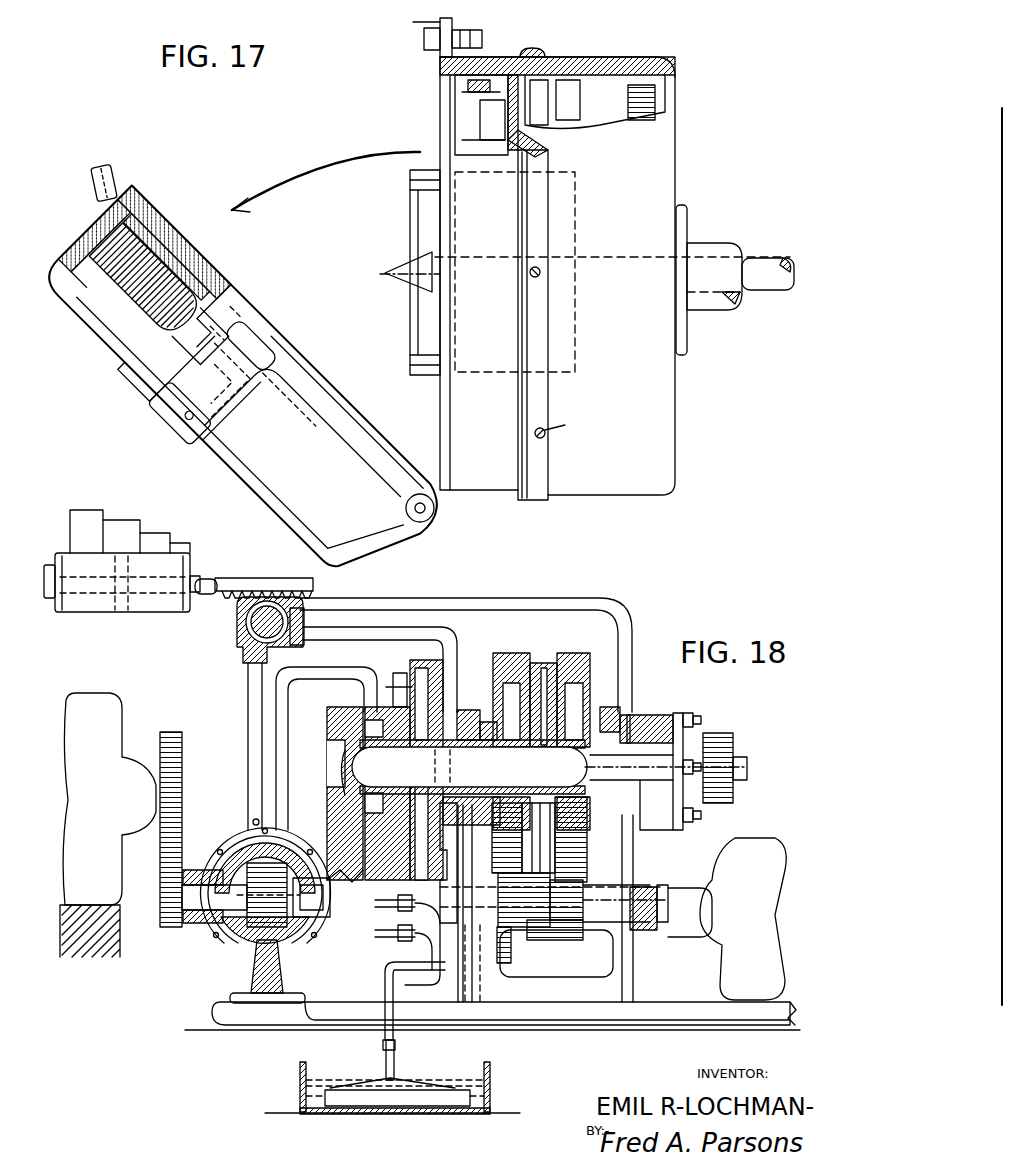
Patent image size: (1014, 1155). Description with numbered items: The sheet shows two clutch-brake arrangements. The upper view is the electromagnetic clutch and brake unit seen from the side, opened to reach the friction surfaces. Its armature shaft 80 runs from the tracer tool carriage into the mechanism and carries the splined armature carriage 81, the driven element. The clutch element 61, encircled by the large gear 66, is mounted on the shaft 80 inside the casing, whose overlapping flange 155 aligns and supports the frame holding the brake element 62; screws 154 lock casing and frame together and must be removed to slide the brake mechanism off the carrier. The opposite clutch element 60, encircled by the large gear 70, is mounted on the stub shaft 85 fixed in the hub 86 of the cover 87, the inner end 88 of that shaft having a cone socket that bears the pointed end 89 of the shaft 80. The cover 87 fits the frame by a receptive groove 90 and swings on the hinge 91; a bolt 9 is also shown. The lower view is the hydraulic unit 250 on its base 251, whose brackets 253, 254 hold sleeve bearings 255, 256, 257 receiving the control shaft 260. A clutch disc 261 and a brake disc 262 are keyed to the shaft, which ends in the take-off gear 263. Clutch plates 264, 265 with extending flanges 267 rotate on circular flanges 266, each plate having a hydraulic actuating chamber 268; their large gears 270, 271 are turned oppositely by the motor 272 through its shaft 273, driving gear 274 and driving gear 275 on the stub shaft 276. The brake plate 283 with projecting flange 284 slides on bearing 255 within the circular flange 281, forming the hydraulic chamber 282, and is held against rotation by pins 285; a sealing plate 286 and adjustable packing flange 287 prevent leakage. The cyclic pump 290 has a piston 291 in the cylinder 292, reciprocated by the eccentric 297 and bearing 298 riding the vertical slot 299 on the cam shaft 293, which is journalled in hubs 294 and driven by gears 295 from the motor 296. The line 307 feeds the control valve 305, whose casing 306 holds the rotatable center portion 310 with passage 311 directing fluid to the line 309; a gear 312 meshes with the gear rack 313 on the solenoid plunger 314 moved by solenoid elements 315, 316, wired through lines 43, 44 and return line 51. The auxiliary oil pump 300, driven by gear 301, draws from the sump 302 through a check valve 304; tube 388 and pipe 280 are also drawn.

In FIG. 17, the bolt 9 is at (425, 22).
In FIG. 17, the overlapping flange 155 is at (545, 60).
In FIG. 17, the clutch element 61 is at (612, 100).
In FIG. 17, the large gear 66 is at (645, 88).
In FIG. 17, the brake element 62 is at (495, 150).
In FIG. 17, the armature carriage 81 is at (415, 226).
In FIG. 17, the pointed end 89 is at (398, 280).
In FIG. 17, the screws 154 is at (532, 276).
In FIG. 17, the armature shaft 80 is at (768, 292).
In FIG. 17, the receptive groove 90 is at (138, 205).
In FIG. 17, the large gear 70 is at (86, 250).
In FIG. 17, the clutch element 60 is at (168, 306).
In FIG. 17, the cover 87 is at (115, 343).
In FIG. 17, the inner end 88 is at (258, 348).
In FIG. 17, the hub 86 is at (152, 401).
In FIG. 17, the stub shaft 85 is at (238, 386).
In FIG. 17, the hinge 91 is at (405, 506).
In FIG. 18, the solenoid element 316 is at (145, 610).
In FIG. 18, the solenoid element 315 is at (72, 610).
In FIG. 18, the line 43 is at (78, 512).
In FIG. 18, the return line 51 is at (112, 522).
In FIG. 18, the line 44 is at (150, 533).
In FIG. 18, the solenoid plunger 314 is at (205, 580).
In FIG. 18, the gear rack 313 is at (246, 575).
In FIG. 18, the rotatable center portion 310 is at (278, 600).
In FIG. 18, the passage 311 is at (240, 645).
In FIG. 18, the gear 312 is at (245, 620).
In FIG. 18, the valve casing 306 is at (238, 666).
In FIG. 18, the control valve 305 is at (243, 678).
In FIG. 18, the brake plate 283 is at (400, 680).
In FIG. 18, the line 309 is at (430, 690).
In FIG. 18, the pins 285 is at (380, 700).
In FIG. 18, the clutch plate 264 is at (622, 606).
In FIG. 18, the unit 250 is at (650, 603).
In FIG. 18, the tube 388 is at (575, 598).
In FIG. 18, the line 307 is at (250, 808).
In FIG. 18, the pipe 280 is at (306, 786).
In FIG. 18, the hydraulic chamber 282 is at (340, 715).
In FIG. 18, the projecting flange 284 is at (345, 728).
In FIG. 18, the sleeve bearing 255 is at (345, 745).
In FIG. 18, the sealing plate 286 is at (345, 768).
In FIG. 18, the control shaft 260 is at (333, 775).
In FIG. 18, the circular flange 281 is at (380, 700).
In FIG. 18, the brake disc 262 is at (437, 665).
In FIG. 18, the extending flange 267 is at (466, 710).
In FIG. 18, the large gear 271 is at (490, 722).
In FIG. 18, the circular flange 266 is at (475, 710).
In FIG. 18, the clutch plate 265 is at (520, 660).
In FIG. 18, the clutch disc 261 is at (512, 652).
In FIG. 18, the hydraulic actuating chamber 268 is at (572, 655).
In FIG. 18, the sleeve bearing 256 is at (544, 767).
In FIG. 18, the adjustable packing flange 287 is at (683, 712).
In FIG. 18, the sleeve bearing 257 is at (735, 746).
In FIG. 18, the take-off gear 263 is at (735, 798).
In FIG. 18, the large gear 270 is at (590, 860).
In FIG. 18, the driving gear 275 is at (550, 940).
In FIG. 18, the stub shaft 276 is at (512, 940).
In FIG. 18, the driving gear 274 is at (570, 920).
In FIG. 18, the shaft 273 is at (665, 884).
In FIG. 18, the driving motor 272 is at (772, 888).
In FIG. 18, the bracket 254 is at (613, 957).
In FIG. 18, the bracket 253 is at (450, 865).
In FIG. 18, the check valve 304 is at (392, 910).
In FIG. 18, the gear 301 is at (500, 970).
In FIG. 18, the auxiliary oil pump 300 is at (447, 1010).
In FIG. 18, the base 251 is at (640, 1010).
In FIG. 18, the motor 296 is at (85, 833).
In FIG. 18, the gears 295 is at (163, 840).
In FIG. 18, the cam shaft 293 is at (160, 915).
In FIG. 18, the cyclic pump 290 is at (208, 958).
In FIG. 18, the hydraulic piston 291 is at (238, 942).
In FIG. 18, the hydraulic cylinder 292 is at (258, 958).
In FIG. 18, the hubs 294 is at (198, 922).
In FIG. 18, the eccentric 297 is at (212, 949).
In FIG. 18, the vertical slot 299 is at (270, 995).
In FIG. 18, the bearing 298 is at (265, 960).
In FIG. 18, the sump 302 is at (390, 1106).